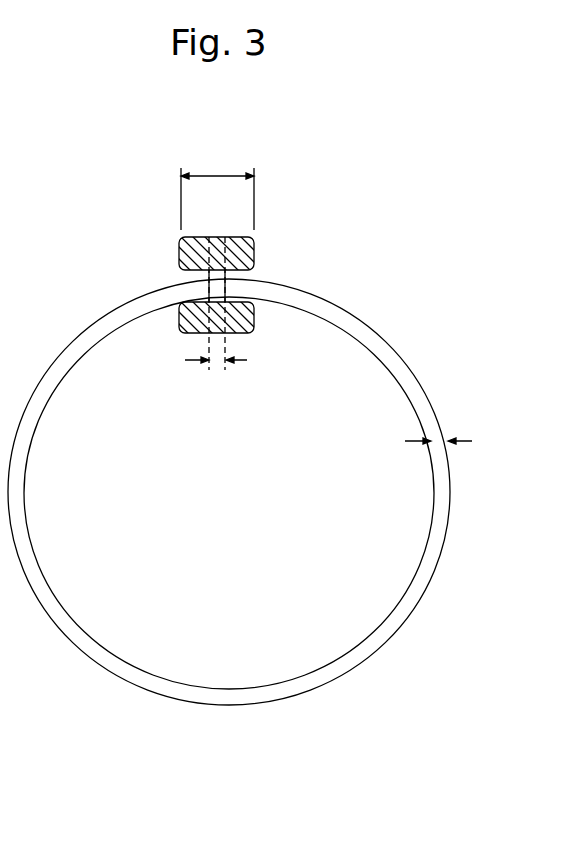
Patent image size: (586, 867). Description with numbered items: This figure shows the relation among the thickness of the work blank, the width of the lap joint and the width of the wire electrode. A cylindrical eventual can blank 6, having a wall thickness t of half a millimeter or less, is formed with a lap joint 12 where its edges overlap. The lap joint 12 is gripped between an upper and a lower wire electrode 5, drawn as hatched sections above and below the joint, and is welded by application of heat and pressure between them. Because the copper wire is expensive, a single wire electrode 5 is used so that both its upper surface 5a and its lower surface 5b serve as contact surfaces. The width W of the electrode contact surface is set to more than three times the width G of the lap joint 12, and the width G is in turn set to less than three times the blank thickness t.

The wire electrode 5 is at (182, 258).
The upper surface of wire electrode 5a is at (222, 246).
The lower surface of wire electrode 5b is at (221, 266).
The can blank 6 is at (433, 548).
The lap joint 12 is at (228, 293).
The width of contact surface W is at (217, 192).
The width of lap joint G is at (217, 362).
The thickness of can blank t is at (437, 442).